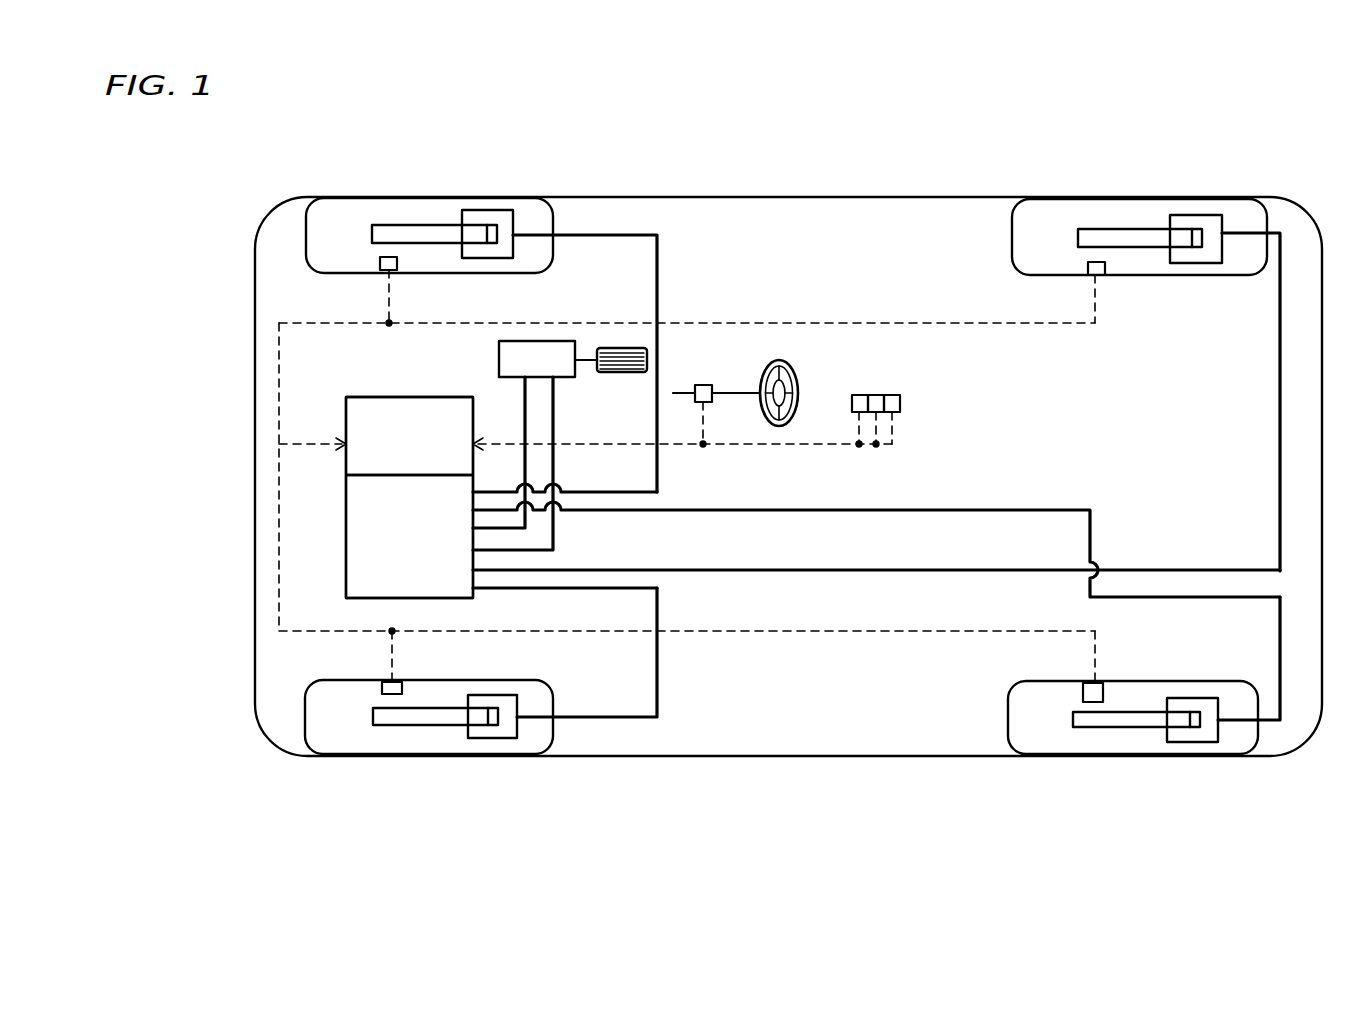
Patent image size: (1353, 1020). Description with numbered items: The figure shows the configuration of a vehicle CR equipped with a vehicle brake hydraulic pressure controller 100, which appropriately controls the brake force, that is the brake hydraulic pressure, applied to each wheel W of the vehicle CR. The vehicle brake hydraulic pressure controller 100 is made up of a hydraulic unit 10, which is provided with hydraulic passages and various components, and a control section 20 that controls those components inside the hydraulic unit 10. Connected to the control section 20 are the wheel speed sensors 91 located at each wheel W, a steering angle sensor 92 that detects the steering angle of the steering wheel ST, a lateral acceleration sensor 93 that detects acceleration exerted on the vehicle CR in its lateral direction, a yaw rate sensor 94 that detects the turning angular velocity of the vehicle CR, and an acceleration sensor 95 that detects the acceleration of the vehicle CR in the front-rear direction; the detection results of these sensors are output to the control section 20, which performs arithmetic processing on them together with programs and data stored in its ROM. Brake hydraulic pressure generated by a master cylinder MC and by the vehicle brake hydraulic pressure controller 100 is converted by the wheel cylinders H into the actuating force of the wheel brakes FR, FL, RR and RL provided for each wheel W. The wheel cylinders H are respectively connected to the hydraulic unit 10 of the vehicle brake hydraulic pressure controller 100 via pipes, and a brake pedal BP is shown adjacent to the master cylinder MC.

The vehicle brake hydraulic pressure controller 100 is at (336, 505).
The hydraulic unit 10 is at (346, 548).
The control section 20 is at (346, 418).
The wheel speed sensor 91 is at (397, 262).
The steering angle sensor 92 is at (703, 385).
The lateral acceleration sensor 93 is at (860, 395).
The yaw rate sensor 94 is at (877, 395).
The acceleration sensor 95 is at (900, 404).
The vehicle CR is at (783, 191).
The wheel W is at (426, 207).
The wheel cylinder H is at (492, 219).
The wheel brake FR is at (393, 231).
The wheel brake RR is at (1094, 236).
The wheel brake FL is at (393, 719).
The wheel brake RL is at (1093, 722).
The master cylinder MC is at (499, 360).
The brake pedal BP is at (628, 373).
The steering wheel ST is at (797, 386).